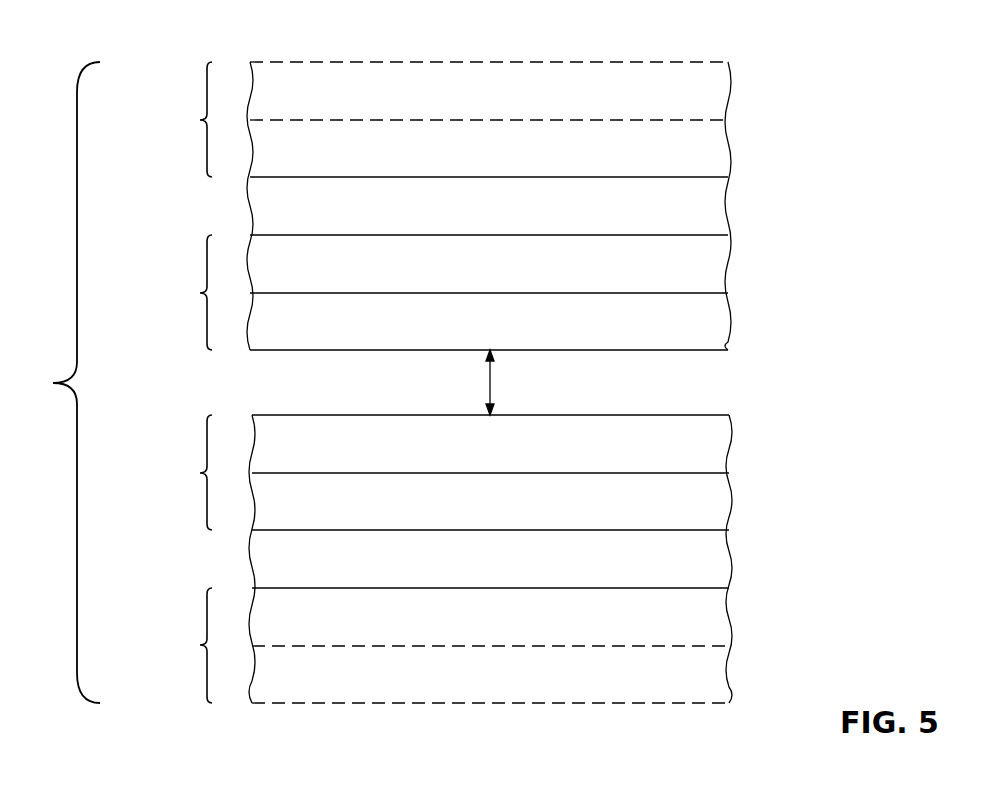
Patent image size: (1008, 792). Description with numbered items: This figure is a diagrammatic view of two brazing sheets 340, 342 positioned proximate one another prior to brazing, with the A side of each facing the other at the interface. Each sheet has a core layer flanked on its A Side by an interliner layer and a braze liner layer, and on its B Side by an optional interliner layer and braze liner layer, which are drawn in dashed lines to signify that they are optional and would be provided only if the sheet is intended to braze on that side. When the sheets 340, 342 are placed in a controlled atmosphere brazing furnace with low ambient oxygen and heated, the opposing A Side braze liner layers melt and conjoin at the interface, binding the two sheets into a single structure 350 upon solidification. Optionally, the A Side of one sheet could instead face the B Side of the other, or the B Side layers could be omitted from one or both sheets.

The brazing sheet 340 is at (752, 62).
The brazing sheet 342 is at (755, 413).
The structure 350 is at (421, 382).